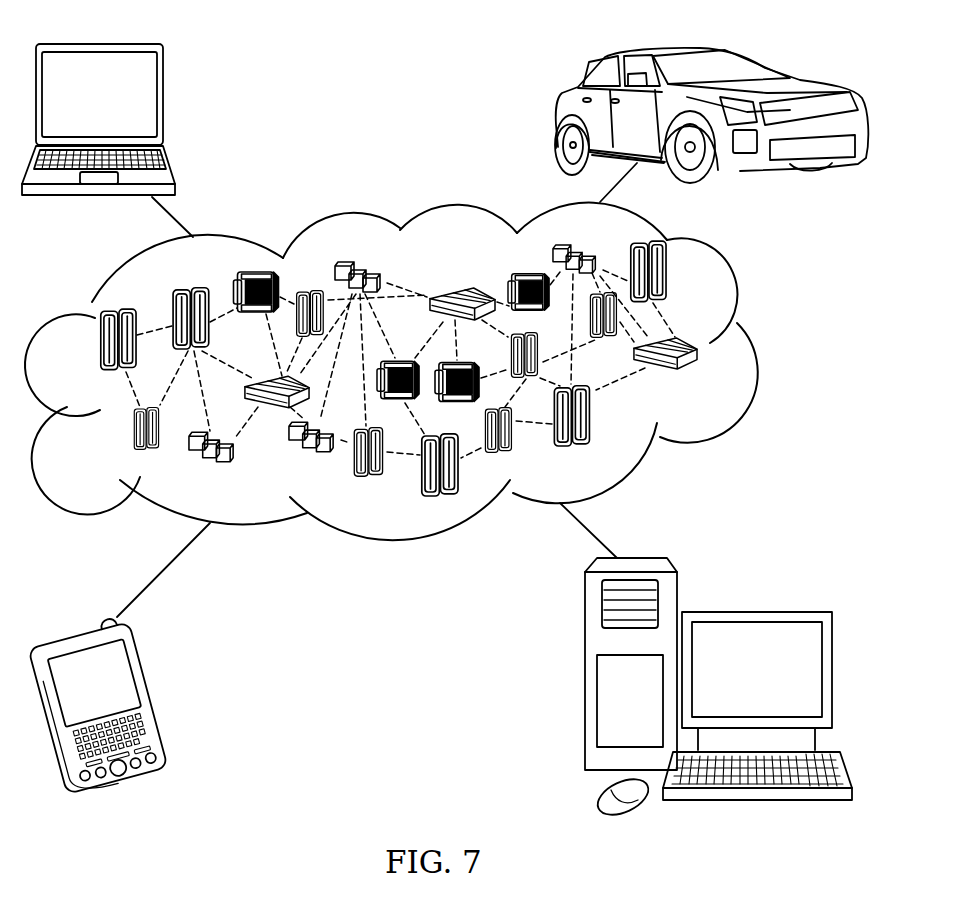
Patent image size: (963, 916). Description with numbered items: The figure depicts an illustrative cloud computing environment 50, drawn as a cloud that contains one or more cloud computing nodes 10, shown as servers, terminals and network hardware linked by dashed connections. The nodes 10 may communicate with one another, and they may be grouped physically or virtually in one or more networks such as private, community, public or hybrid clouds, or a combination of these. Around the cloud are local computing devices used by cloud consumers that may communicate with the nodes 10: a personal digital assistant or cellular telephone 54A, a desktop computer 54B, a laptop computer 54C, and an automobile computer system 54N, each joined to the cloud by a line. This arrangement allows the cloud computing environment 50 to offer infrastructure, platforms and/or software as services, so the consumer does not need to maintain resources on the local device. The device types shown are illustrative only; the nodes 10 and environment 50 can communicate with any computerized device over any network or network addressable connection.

The cloud computing node 10 is at (700, 378).
The cloud computing environment 50 is at (415, 372).
The personal digital assistant or cellular telephone 54A is at (157, 695).
The desktop computer 54B is at (753, 612).
The laptop computer 54C is at (163, 101).
The automobile computer system 54N is at (556, 113).